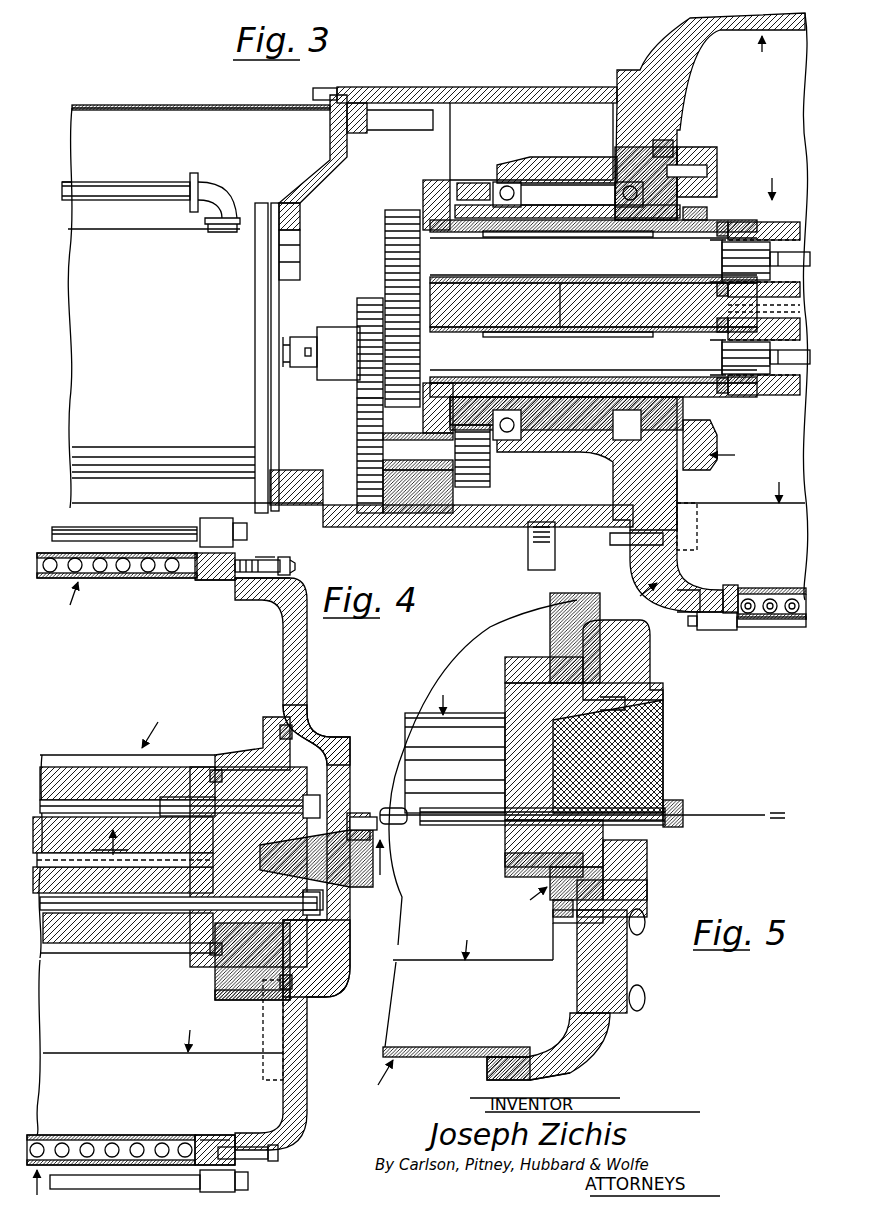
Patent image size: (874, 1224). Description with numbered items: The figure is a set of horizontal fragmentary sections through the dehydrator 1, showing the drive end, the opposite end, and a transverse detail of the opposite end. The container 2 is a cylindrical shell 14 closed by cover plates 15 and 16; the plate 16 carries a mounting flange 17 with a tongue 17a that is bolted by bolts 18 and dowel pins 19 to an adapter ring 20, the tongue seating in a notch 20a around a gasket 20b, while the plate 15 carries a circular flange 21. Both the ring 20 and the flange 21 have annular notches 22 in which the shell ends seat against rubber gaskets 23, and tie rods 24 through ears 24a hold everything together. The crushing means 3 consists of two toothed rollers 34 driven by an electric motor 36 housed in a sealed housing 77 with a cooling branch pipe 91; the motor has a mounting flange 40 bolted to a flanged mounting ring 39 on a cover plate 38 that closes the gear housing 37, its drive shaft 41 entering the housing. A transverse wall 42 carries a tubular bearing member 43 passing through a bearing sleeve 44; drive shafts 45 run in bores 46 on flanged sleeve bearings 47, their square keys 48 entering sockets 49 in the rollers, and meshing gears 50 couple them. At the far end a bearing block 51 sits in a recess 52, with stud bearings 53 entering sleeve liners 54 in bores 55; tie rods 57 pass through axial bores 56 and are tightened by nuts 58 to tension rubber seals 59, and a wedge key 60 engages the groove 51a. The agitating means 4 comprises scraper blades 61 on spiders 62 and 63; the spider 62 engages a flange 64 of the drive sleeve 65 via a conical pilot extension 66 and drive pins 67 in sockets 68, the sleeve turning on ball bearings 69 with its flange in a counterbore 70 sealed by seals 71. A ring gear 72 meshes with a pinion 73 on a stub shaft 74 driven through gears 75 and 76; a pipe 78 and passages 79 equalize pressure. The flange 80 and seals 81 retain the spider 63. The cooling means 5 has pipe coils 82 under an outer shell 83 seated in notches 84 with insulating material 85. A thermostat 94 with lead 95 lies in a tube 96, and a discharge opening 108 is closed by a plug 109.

In FIG. 3, the drying unit or dehydrator 1 is at (642, 593).
In FIG. 3, the container 2 is at (757, 57).
In FIG. 4, the container 2 is at (70, 596).
In FIG. 5, the container 2 is at (380, 1078).
In FIG. 3, the crushing means 3 is at (771, 180).
In FIG. 4, the crushing means 3 is at (156, 728).
In FIG. 5, the crushing means 3 is at (442, 697).
In FIG. 3, the agitating means 4 is at (776, 483).
In FIG. 4, the agitating means 4 is at (194, 1041).
In FIG. 5, the agitating means 4 is at (465, 949).
In FIG. 4, the cooling means 5 is at (78, 1017).
In FIG. 5, the cooling means 5 is at (386, 859).
In FIG. 3, the cylindrical shell 14 is at (776, 598).
In FIG. 4, the cylindrical shell 14 is at (115, 580).
In FIG. 5, the cylindrical shell 14 is at (425, 1057).
In FIG. 3, the cover plate 15 is at (668, 44).
In FIG. 4, the cover plate 16 is at (307, 641).
In FIG. 5, the cover plate 16 is at (640, 895).
In FIG. 4, the mounting flange 17 is at (280, 557).
In FIG. 5, the mounting flange 17 is at (572, 1072).
In FIG. 4, the annular rib or tongue 17a is at (237, 582).
In FIG. 4, the bolts 18 is at (295, 566).
In FIG. 4, the dowel pins 19 is at (278, 1153).
In FIG. 4, the adapter ring 20 is at (222, 578).
In FIG. 4, the annular notch 20a is at (222, 590).
In FIG. 4, the gasket 20b is at (262, 560).
In FIG. 3, the circular flange 21 is at (690, 604).
In FIG. 3, the annular notches 22 is at (728, 590).
In FIG. 4, the annular notches 22 is at (215, 1135).
In FIG. 3, the rubber gaskets 23 is at (745, 590).
In FIG. 4, the rubber gaskets 23 is at (200, 1135).
In FIG. 4, the tie rods 24 is at (67, 531).
In FIG. 4, the ears 24a is at (205, 522).
In FIG. 3, the rollers 34 is at (785, 222).
In FIG. 4, the rollers 34 is at (95, 768).
In FIG. 5, the rollers 34 is at (478, 722).
In FIG. 3, the electric motor 36 is at (80, 246).
In FIG. 3, the gear housing 37 is at (488, 83).
In FIG. 3, the cover plate 38 is at (332, 145).
In FIG. 3, the flanged mounting ring 39 is at (297, 233).
In FIG. 3, the mounting flange 40 is at (257, 276).
In FIG. 3, the drive shaft 41 is at (304, 340).
In FIG. 3, the transverse web or wall 42 is at (428, 184).
In FIG. 3, the tubular bearing member 43 is at (602, 233).
In FIG. 3, the bearing sleeve 44 is at (548, 165).
In FIG. 3, the drive shafts 45 is at (548, 267).
In FIG. 3, the longitudinal bores 46 is at (578, 233).
In FIG. 3, the flanged sleeve bearings 47 is at (485, 277).
In FIG. 3, the square keys 48 is at (755, 260).
In FIG. 3, the sockets 49 is at (722, 264).
In FIG. 3, the meshing gears 50 is at (400, 317).
In FIG. 4, the bearing block 51 is at (255, 945).
In FIG. 5, the bearing block 51 is at (518, 840).
In FIG. 4, the diametrical groove 51a is at (268, 847).
In FIG. 5, the diametrical groove 51a is at (608, 756).
In FIG. 4, the recess 52 is at (323, 947).
In FIG. 5, the recess 52 is at (625, 870).
In FIG. 4, the stud bearings 53 is at (175, 797).
In FIG. 4, the bearing sleeve liners 54 is at (205, 770).
In FIG. 4, the bores 55 is at (150, 800).
In FIG. 4, the axial bores 56 is at (92, 935).
In FIG. 3, the tie rods 57 is at (790, 351).
In FIG. 4, the tie rods 57 is at (255, 903).
In FIG. 4, the nuts 58 is at (316, 911).
In FIG. 3, the annular rubber seals 59 is at (724, 228).
In FIG. 4, the annular rubber seals 59 is at (170, 853).
In FIG. 4, the wedge key 60 is at (357, 813).
In FIG. 5, the wedge key 60 is at (612, 696).
In FIG. 3, the scraper blades 61 is at (748, 503).
In FIG. 4, the scraper blades 61 is at (118, 1053).
In FIG. 5, the scraper blades 61 is at (430, 960).
In FIG. 3, the spider 62 is at (733, 459).
In FIG. 4, the spider 63 is at (262, 990).
In FIG. 5, the spider 63 is at (527, 900).
In FIG. 3, the flange 64 is at (648, 466).
In FIG. 3, the drive sleeve 65 is at (575, 215).
In FIG. 3, the conical pilot extension 66 is at (717, 428).
In FIG. 3, the drive pins 67 is at (707, 172).
In FIG. 3, the sockets 68 is at (717, 160).
In FIG. 3, the ball bearings 69 is at (507, 185).
In FIG. 3, the counterbore 70 is at (625, 160).
In FIG. 3, the annular rubber seals 71 is at (668, 143).
In FIG. 3, the ring gear 72 is at (473, 185).
In FIG. 3, the pinion 73 is at (485, 476).
In FIG. 3, the stub shaft 74 is at (405, 448).
In FIG. 3, the gear 75 is at (368, 438).
In FIG. 3, the gear 76 is at (366, 393).
In FIG. 3, the sealed housing 77 is at (172, 106).
In FIG. 3, the pipe 78 is at (528, 560).
In FIG. 3, the passages 79 is at (515, 425).
In FIG. 4, the flange 80 is at (305, 740).
In FIG. 5, the flange 80 is at (590, 665).
In FIG. 4, the annular rubber seals 81 is at (215, 772).
In FIG. 5, the annular rubber seals 81 is at (577, 617).
In FIG. 3, the pipe coils 82 is at (785, 615).
In FIG. 4, the pipe coils 82 is at (148, 578).
In FIG. 3, the outer concentric shell 83 is at (760, 628).
In FIG. 4, the outer concentric shell 83 is at (105, 537).
In FIG. 3, the peripheral notches 84 is at (712, 624).
In FIG. 4, the peripheral notches 84 is at (226, 856).
In FIG. 5, the peripheral notches 84 is at (487, 1073).
In FIG. 3, the insulating material 85 is at (770, 620).
In FIG. 4, the insulating material 85 is at (100, 1142).
In FIG. 3, the branch pipe 91 is at (138, 186).
In FIG. 5, the thermostat 94 is at (400, 828).
In FIG. 5, the lead 95 is at (708, 813).
In FIG. 5, the tube 96 is at (450, 826).
In FIG. 5, the discharge opening 108 is at (560, 918).
In FIG. 5, the plug 109 is at (628, 982).